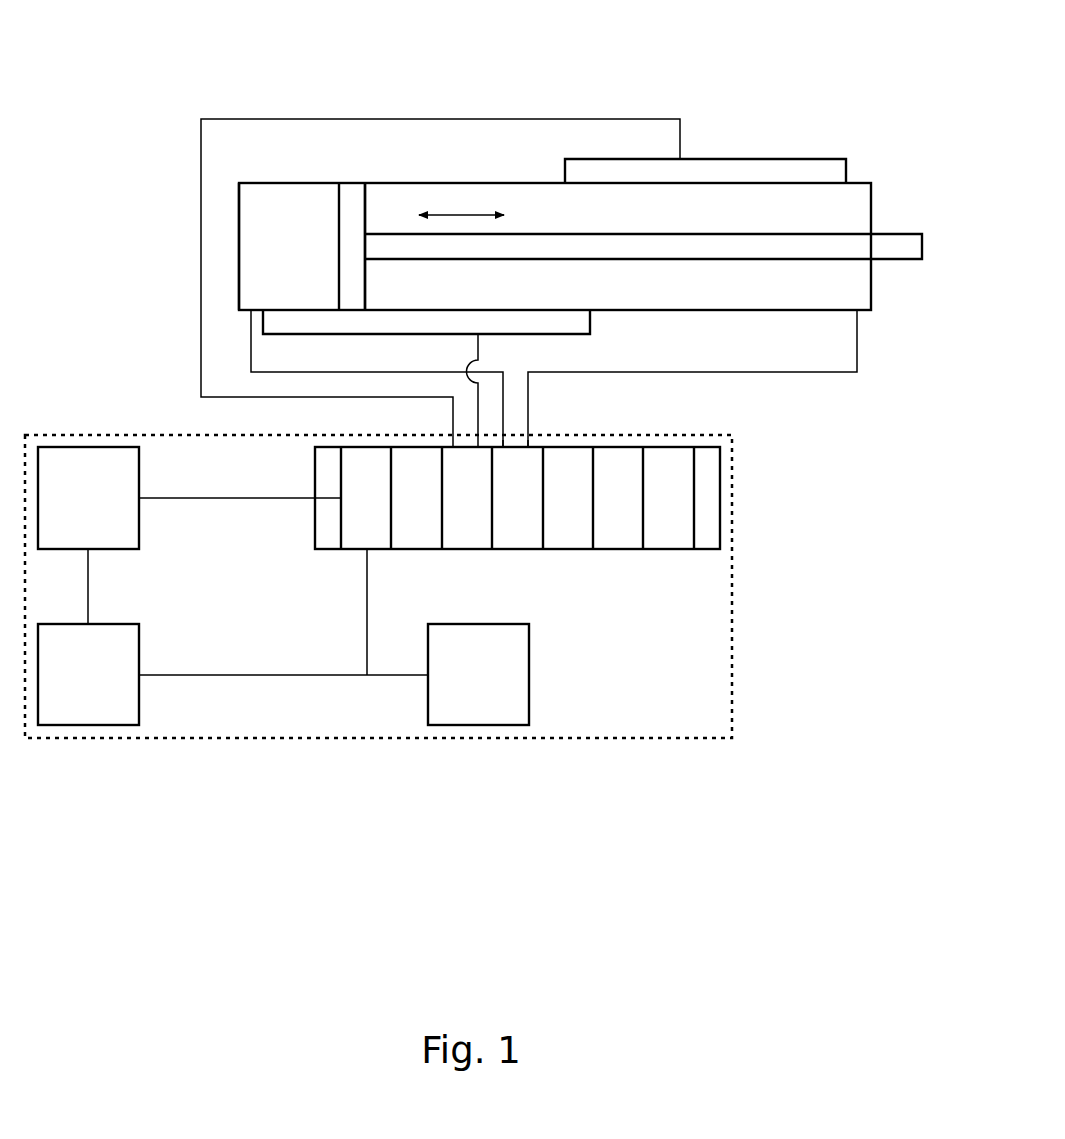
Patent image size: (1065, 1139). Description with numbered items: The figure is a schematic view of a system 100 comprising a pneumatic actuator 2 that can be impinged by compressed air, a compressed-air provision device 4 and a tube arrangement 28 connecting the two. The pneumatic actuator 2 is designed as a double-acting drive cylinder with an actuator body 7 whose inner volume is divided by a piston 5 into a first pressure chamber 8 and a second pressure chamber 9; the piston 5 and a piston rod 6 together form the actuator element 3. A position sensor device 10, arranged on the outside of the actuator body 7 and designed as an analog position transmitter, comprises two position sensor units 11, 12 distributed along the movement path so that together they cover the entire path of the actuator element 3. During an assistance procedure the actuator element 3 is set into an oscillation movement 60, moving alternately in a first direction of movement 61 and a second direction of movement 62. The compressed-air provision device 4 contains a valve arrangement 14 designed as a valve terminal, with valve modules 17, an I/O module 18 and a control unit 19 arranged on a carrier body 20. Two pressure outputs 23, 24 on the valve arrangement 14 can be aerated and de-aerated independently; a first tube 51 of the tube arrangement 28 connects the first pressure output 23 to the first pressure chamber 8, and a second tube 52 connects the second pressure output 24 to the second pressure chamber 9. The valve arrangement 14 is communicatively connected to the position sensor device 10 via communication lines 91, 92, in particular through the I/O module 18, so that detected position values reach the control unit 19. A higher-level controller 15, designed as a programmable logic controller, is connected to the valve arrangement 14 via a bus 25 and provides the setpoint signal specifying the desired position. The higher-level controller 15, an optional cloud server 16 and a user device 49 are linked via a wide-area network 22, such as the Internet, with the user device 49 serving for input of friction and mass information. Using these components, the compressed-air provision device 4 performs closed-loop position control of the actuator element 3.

The system 100 is at (147, 84).
The pneumatic actuator 2 is at (150, 257).
The communication line 92 is at (392, 119).
The actuator body 7 is at (859, 182).
The first pressure chamber 8 is at (284, 257).
The second pressure chamber 9 is at (611, 223).
The actuator element 3 is at (636, 239).
The piston 5 is at (357, 293).
The piston rod 6 is at (897, 243).
The oscillation movement 60 is at (449, 217).
The first direction of movement 61 is at (516, 217).
The second direction of movement 62 is at (405, 217).
The position sensor device 10 is at (554, 223).
The position sensor unit 12 is at (780, 168).
The position sensor unit 11 is at (582, 322).
The tube arrangement 28 is at (597, 378).
The first tube 51 is at (322, 372).
The second tube 52 is at (823, 372).
The communication line 91 is at (480, 347).
The first pressure output 23 is at (505, 447).
The second pressure output 24 is at (533, 447).
The compressed-air provision device 4 is at (732, 567).
The valve arrangement 14 is at (720, 483).
The carrier body 20 is at (326, 542).
The control unit 19 is at (354, 512).
The I/O module 18 is at (404, 512).
The valve module 17 is at (506, 512).
The higher-level controller 15 is at (76, 510).
The cloud server 16 is at (76, 687).
The user device 49 is at (466, 687).
The bus 25 is at (240, 487).
The wide-area network 22 is at (258, 612).